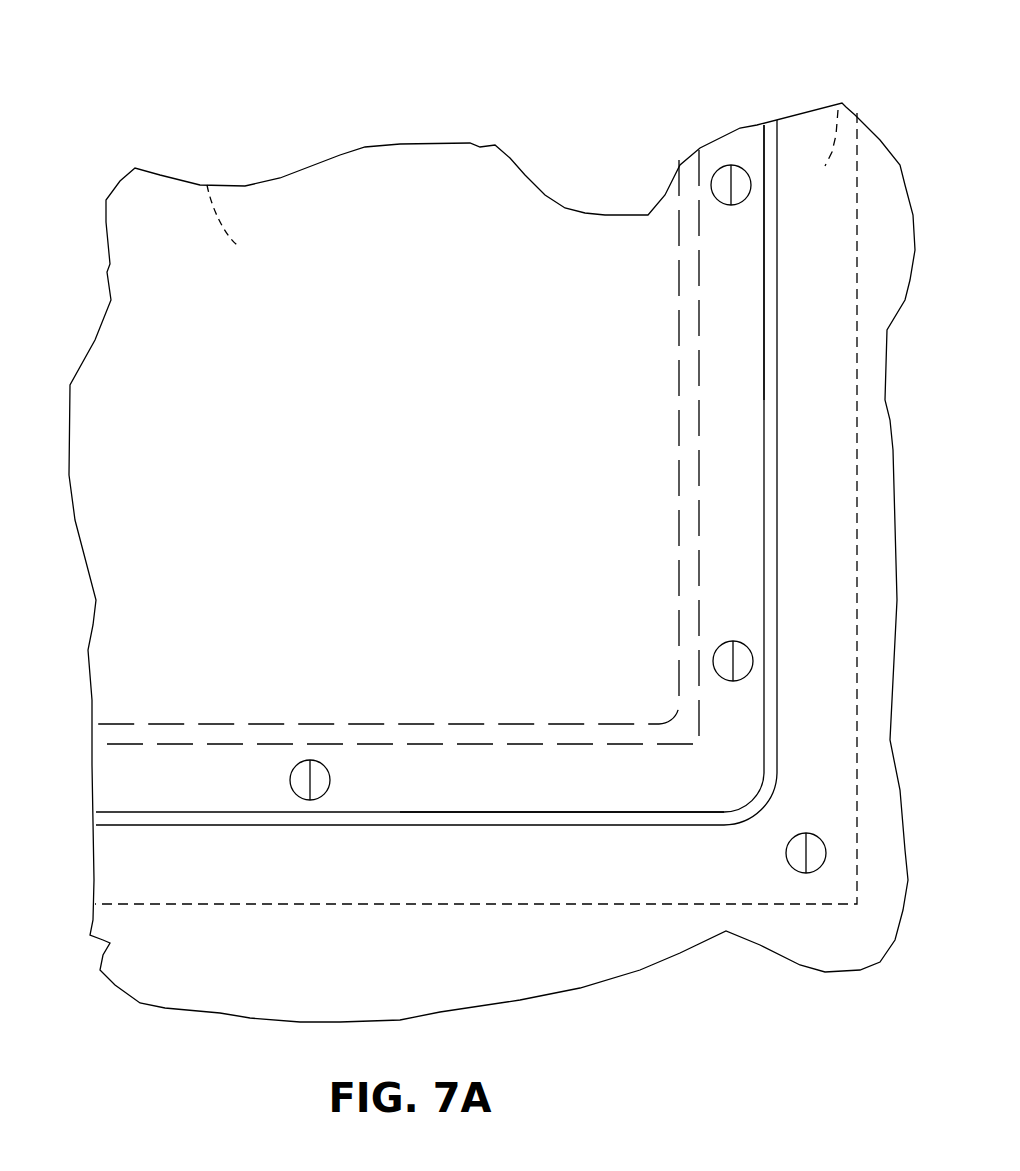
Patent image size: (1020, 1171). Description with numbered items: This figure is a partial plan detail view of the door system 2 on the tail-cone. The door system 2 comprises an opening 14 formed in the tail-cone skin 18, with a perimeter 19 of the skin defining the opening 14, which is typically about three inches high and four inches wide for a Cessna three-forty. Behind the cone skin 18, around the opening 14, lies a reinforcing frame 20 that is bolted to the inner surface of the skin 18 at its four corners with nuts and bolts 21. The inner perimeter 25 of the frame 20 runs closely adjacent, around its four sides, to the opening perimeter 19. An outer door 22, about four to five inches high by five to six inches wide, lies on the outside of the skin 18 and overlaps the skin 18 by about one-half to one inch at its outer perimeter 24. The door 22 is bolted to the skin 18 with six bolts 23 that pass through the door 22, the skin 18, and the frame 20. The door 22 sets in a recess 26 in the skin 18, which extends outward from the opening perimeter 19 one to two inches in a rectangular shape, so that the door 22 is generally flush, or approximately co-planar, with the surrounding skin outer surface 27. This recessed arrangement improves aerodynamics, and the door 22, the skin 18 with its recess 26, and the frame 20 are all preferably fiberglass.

The door system 2 is at (88, 286).
The opening 14 is at (207, 185).
The tail-cone skin 18 is at (878, 201).
The perimeter 19 is at (677, 268).
The reinforcing frame 20 is at (838, 103).
The nuts and bolts 21 is at (797, 865).
The outer door 22 is at (417, 345).
The bolts 23 is at (733, 661).
The outer perimeter 24 is at (767, 712).
The inner perimeter 25 is at (698, 448).
The recess 26 is at (768, 153).
The skin outer surface 27 is at (398, 957).